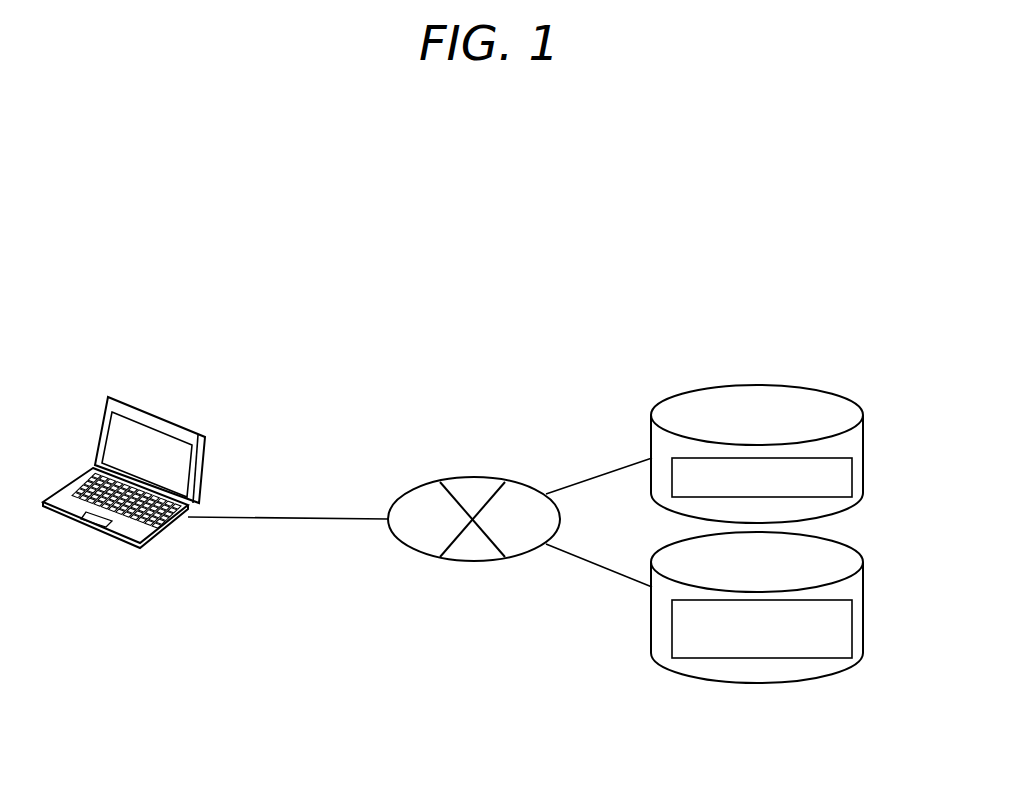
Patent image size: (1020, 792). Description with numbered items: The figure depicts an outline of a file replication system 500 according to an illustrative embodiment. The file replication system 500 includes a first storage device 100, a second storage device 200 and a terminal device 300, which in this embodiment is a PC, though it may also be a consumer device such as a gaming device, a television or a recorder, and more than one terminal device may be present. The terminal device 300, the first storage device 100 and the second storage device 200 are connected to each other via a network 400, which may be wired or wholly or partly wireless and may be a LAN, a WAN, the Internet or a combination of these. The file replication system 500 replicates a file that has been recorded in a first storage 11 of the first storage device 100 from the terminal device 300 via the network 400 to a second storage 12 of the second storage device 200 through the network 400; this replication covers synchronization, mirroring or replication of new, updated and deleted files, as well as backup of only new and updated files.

The terminal device 300 is at (205, 458).
The network 400 is at (518, 479).
The file replication system 500 is at (804, 497).
The first storage device 100 is at (804, 454).
The first storage 11 is at (853, 474).
The second storage device 200 is at (804, 607).
The second storage 12 is at (853, 637).